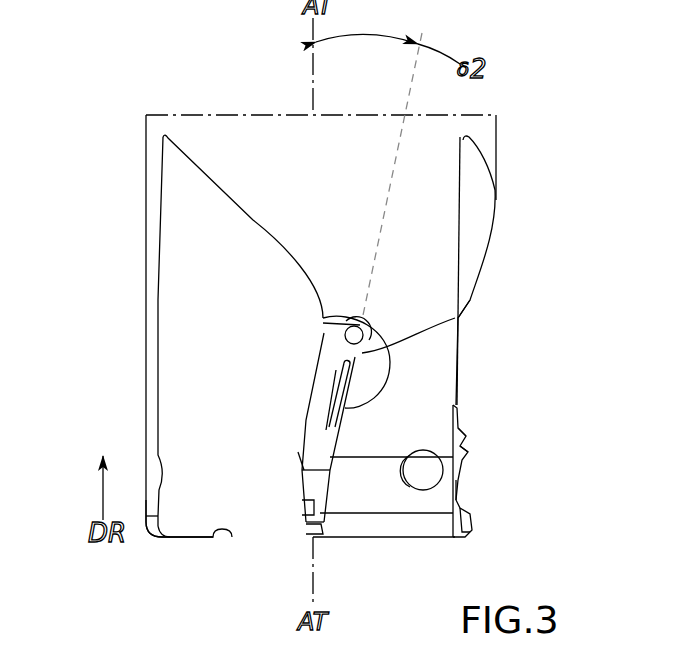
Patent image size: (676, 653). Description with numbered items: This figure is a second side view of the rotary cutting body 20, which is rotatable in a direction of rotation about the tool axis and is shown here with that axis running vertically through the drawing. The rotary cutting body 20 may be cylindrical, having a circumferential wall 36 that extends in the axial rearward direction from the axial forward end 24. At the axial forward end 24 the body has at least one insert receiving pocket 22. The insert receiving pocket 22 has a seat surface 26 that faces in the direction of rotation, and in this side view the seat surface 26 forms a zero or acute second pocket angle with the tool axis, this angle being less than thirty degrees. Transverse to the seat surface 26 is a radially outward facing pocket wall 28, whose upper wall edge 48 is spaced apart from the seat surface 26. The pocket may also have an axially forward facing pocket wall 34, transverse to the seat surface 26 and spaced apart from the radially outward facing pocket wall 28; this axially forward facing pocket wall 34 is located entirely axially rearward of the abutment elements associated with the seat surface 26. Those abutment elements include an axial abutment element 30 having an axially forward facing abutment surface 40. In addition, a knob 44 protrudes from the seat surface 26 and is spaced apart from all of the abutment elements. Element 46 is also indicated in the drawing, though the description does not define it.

The rotary cutting body 20 is at (128, 305).
The insert receiving pocket 22 is at (303, 407).
The axial forward end 24 is at (178, 542).
The seat surface 26 is at (318, 536).
The radially outward facing pocket wall 28 is at (299, 480).
The axial abutment element 30 is at (325, 443).
The axially forward facing pocket wall 34 is at (455, 318).
The circumferential wall 36 is at (416, 284).
The axially forward facing abutment surface 40 is at (467, 455).
The knob 44 is at (307, 528).
The cutting edge 46 is at (470, 438).
The upper wall edge 48 is at (298, 452).